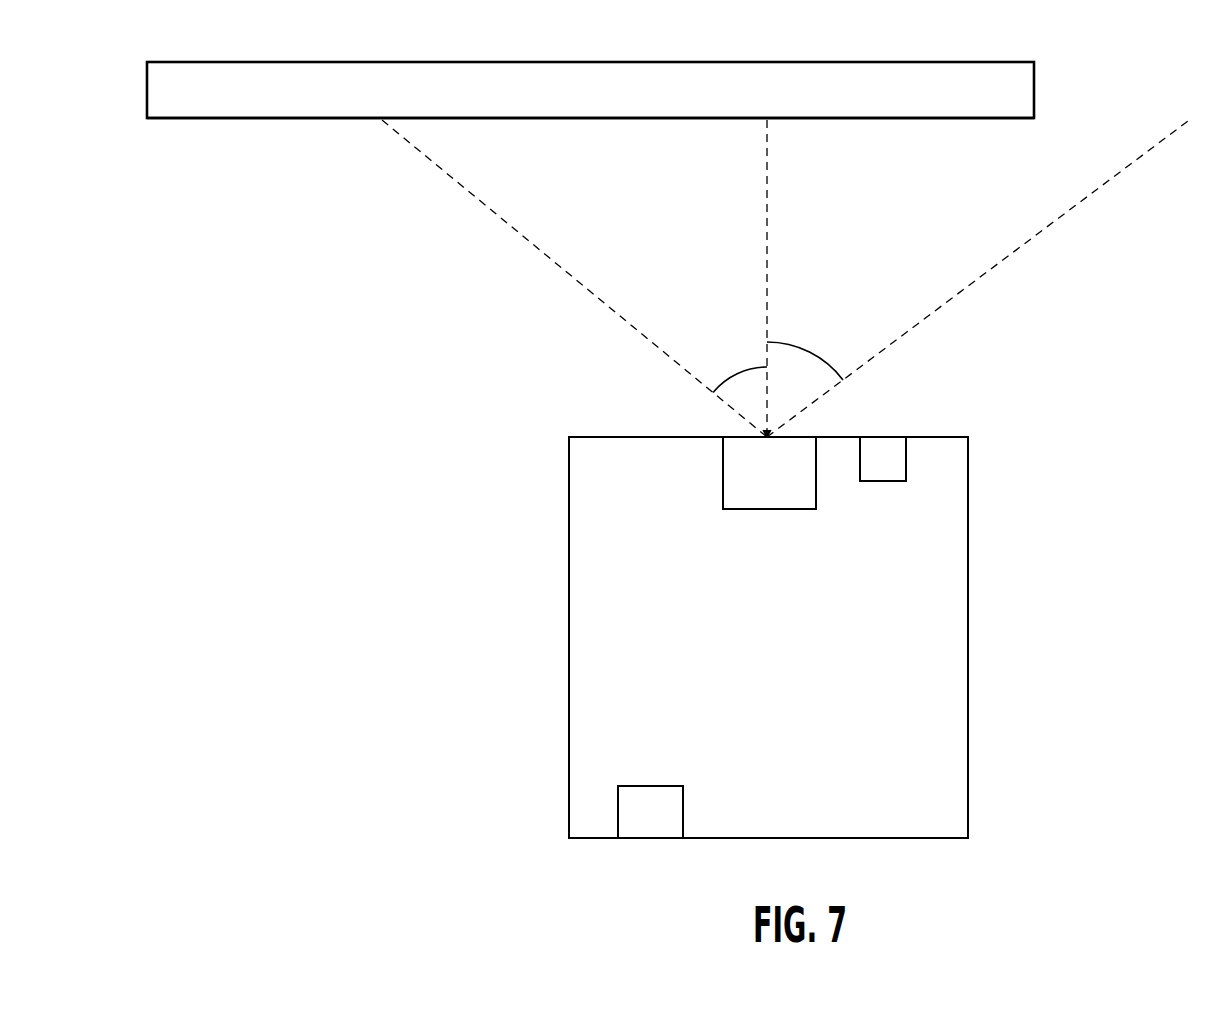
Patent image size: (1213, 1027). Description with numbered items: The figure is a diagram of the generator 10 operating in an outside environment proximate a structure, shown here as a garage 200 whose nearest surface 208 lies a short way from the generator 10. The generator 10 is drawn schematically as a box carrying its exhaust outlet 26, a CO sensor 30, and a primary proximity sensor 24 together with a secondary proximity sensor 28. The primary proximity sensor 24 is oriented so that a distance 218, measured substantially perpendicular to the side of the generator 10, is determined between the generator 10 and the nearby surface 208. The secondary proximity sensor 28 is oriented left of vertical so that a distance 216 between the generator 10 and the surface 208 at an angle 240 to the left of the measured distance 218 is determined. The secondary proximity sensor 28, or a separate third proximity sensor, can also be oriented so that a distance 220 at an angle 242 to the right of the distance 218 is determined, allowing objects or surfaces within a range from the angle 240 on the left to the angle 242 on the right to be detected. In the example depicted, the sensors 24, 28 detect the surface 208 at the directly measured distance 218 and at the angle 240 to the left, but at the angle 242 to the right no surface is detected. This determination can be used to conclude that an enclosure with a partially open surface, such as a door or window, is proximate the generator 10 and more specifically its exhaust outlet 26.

The generator 10 is at (947, 617).
The primary proximity sensor 24 is at (798, 478).
The exhaust outlet 26 is at (881, 437).
The secondary proximity sensor 28 is at (740, 483).
The CO sensor 30 is at (639, 821).
The garage 200 is at (940, 82).
The surface 208 is at (840, 120).
The distance 216 is at (559, 266).
The distance 218 is at (767, 280).
The distance 220 is at (1057, 220).
The angle 240 is at (743, 370).
The angle 242 is at (807, 347).